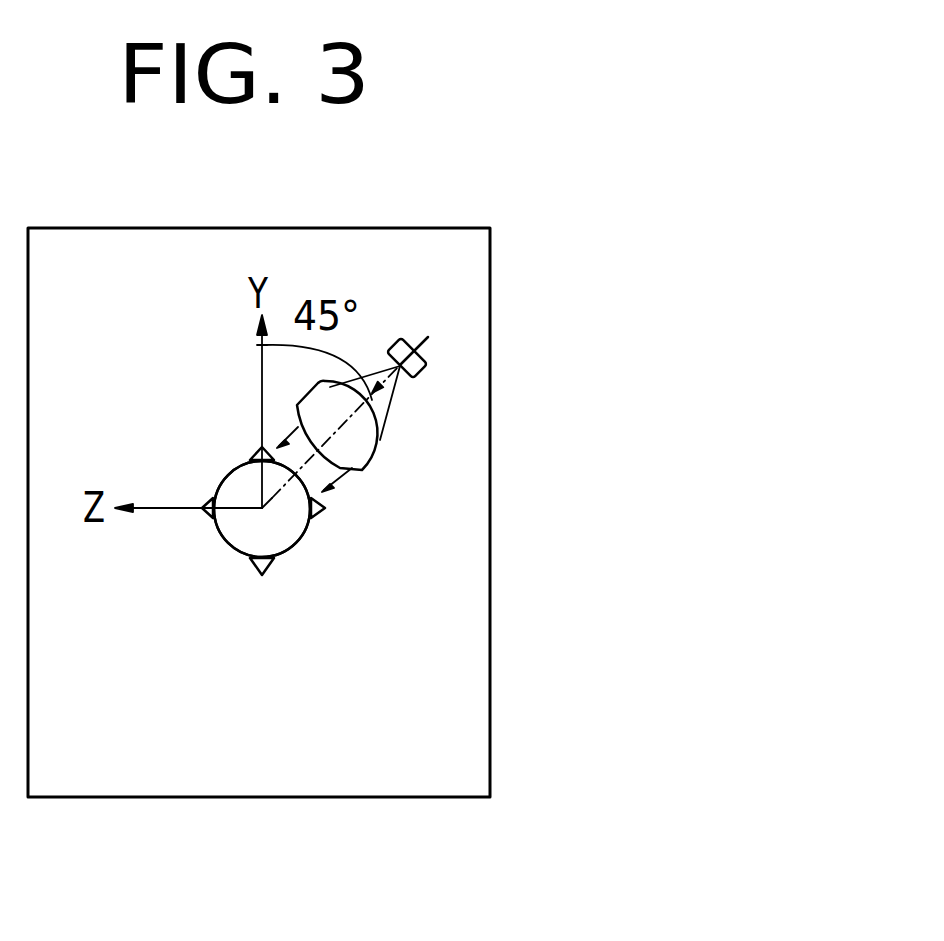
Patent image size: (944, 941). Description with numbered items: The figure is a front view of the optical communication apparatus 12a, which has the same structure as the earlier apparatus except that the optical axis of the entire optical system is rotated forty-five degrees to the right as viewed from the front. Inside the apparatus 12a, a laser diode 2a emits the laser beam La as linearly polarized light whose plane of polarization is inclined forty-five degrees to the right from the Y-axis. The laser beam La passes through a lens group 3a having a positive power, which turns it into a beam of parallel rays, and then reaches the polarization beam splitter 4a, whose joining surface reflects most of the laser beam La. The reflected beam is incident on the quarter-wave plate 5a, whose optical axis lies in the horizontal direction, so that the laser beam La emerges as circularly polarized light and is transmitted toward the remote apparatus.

The optical communication apparatus 12a is at (491, 305).
The laser diode 2a is at (398, 338).
The lens group 3a is at (379, 456).
The polarization beam splitter 4a is at (253, 578).
The quarter-wave plate 5a is at (297, 547).
The laser beam La is at (342, 468).